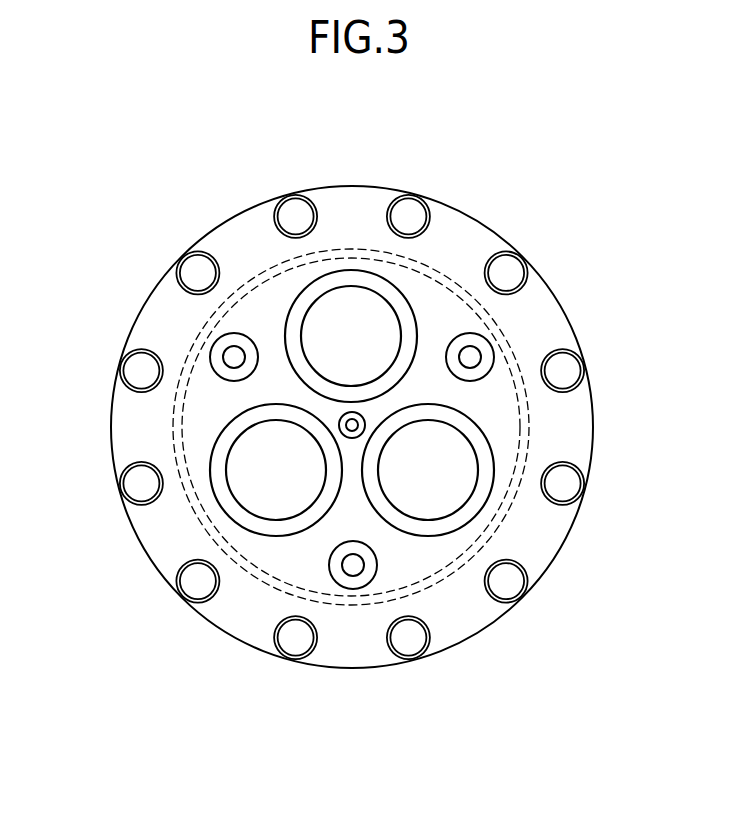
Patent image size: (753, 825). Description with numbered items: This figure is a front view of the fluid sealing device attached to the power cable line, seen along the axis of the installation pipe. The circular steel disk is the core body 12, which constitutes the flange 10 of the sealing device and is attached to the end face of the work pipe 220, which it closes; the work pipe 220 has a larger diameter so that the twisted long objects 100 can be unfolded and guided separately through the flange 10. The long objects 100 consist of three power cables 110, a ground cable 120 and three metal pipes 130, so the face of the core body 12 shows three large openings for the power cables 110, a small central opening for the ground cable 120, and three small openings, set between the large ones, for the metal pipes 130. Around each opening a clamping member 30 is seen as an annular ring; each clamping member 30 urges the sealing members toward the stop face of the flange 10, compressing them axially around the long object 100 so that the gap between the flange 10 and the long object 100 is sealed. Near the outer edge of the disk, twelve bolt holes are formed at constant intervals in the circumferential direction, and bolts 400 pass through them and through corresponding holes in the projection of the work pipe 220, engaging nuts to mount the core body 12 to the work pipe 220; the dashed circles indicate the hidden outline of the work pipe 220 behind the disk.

The flange 10 is at (442, 300).
The core body 12 is at (352, 411).
The clamping member 30 is at (360, 280).
The long objects 100 is at (355, 445).
The power cable 110 is at (325, 317).
The ground cable 120 is at (355, 423).
The metal pipe 130 is at (222, 353).
The work pipe 220 is at (433, 270).
The bolt 400 is at (510, 262).